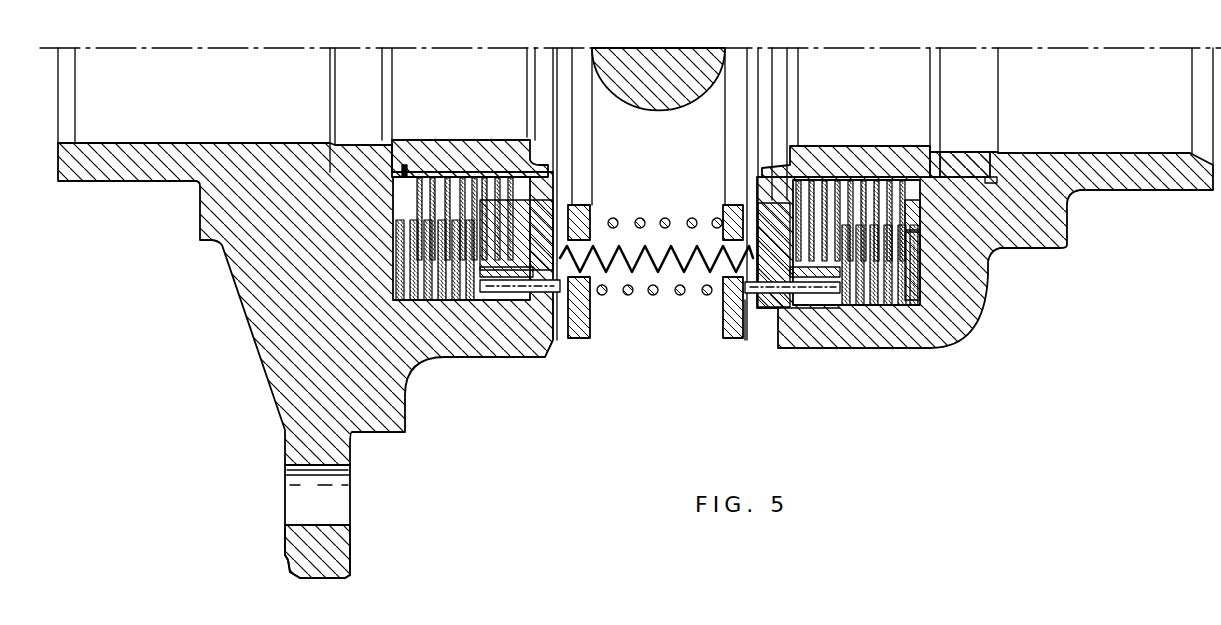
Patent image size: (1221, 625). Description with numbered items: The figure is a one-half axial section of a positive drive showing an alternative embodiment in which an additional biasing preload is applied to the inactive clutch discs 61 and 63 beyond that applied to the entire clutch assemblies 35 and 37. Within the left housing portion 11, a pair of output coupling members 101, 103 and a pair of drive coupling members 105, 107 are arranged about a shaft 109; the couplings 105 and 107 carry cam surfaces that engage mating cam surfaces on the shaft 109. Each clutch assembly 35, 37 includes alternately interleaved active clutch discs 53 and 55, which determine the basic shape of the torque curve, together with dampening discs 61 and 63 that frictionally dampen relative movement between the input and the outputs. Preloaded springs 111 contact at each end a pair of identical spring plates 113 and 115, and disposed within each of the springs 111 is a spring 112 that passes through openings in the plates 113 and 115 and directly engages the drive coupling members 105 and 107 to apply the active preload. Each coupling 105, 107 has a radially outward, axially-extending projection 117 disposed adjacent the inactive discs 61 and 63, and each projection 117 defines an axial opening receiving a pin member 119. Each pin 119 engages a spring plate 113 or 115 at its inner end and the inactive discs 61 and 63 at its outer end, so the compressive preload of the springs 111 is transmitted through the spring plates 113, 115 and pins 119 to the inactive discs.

The left housing portion 11 is at (955, 325).
The clutch assembly 35 is at (434, 204).
The clutch assembly 37 is at (897, 210).
The clutch discs 53 is at (462, 190).
The clutch discs 55 is at (550, 216).
The clutch discs 61 is at (905, 213).
The clutch discs 63 is at (920, 258).
The output coupling member 101 is at (345, 150).
The output coupling member 103 is at (985, 152).
The drive coupling member 105 is at (500, 357).
The drive coupling member 107 is at (800, 310).
The shaft 109 is at (656, 55).
The preloaded springs 111 is at (680, 295).
The spring 112 is at (637, 270).
The spring plate 113 is at (580, 330).
The spring plate 115 is at (727, 340).
The projection 117 is at (485, 292).
The pin member 119 is at (557, 338).